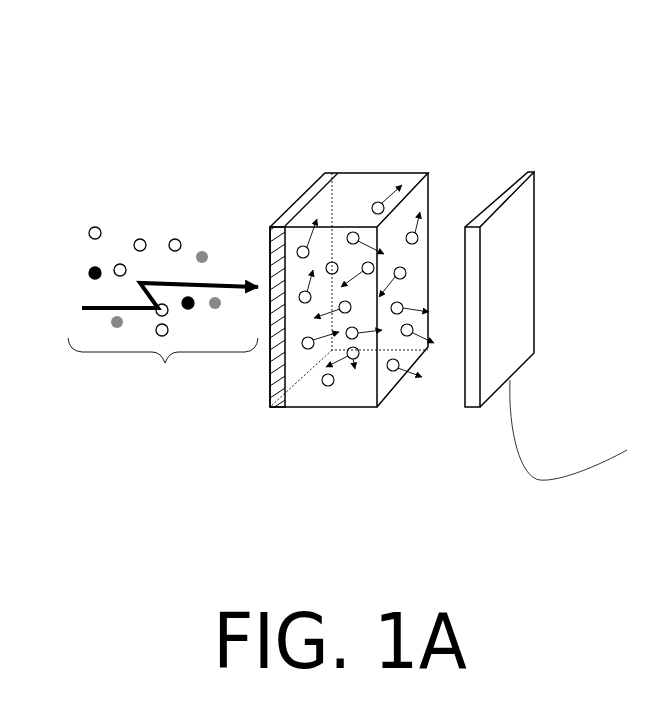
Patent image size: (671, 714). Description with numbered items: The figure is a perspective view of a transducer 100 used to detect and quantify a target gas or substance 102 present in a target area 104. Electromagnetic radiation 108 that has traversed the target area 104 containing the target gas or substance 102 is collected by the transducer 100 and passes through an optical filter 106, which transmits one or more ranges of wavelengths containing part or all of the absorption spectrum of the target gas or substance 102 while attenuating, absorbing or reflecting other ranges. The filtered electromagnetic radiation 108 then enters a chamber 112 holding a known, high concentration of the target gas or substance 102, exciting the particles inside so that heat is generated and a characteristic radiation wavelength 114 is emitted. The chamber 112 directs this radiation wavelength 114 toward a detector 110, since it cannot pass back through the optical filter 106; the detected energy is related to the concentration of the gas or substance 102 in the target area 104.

The transducer 100 is at (195, 60).
The target gas or substance 102 is at (136, 241).
The target area 104 is at (163, 378).
The optical filter 106 is at (266, 356).
The electromagnetic radiation 108 is at (237, 279).
The detector 110 is at (538, 257).
The chamber 112 is at (388, 168).
The radiation wavelength 114 is at (351, 380).